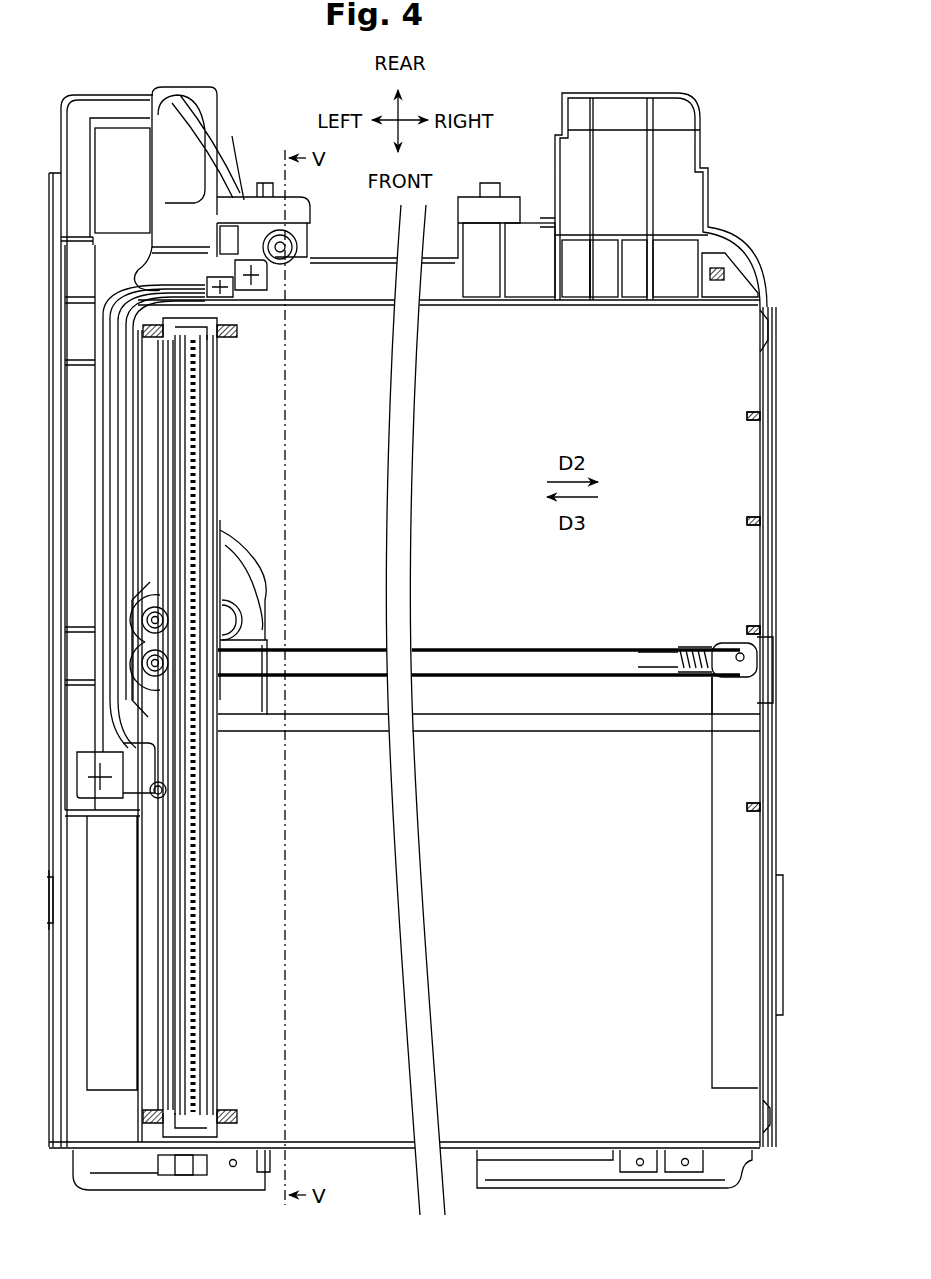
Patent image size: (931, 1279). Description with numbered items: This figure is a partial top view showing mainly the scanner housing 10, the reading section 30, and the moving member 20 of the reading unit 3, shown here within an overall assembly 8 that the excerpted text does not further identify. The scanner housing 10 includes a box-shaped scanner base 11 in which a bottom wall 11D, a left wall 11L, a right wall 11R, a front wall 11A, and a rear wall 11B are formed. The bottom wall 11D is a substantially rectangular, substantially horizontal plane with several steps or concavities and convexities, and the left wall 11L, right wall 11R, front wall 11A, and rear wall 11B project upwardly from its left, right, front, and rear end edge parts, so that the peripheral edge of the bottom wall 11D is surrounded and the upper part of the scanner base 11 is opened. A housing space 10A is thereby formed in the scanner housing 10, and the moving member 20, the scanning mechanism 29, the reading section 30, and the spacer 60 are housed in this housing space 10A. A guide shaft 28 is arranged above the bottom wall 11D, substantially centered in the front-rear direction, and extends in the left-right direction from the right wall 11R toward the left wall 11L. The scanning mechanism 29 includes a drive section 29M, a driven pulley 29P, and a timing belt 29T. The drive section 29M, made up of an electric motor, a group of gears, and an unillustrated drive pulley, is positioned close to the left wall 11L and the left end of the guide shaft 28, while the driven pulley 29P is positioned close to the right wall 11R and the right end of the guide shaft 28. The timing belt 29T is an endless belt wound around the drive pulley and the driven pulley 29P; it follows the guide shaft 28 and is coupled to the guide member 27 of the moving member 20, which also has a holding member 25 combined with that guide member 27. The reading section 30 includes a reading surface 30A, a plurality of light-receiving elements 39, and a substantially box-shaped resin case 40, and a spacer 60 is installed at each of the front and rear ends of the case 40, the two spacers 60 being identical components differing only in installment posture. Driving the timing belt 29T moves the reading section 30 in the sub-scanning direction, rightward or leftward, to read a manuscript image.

The reading unit 3 is at (657, 925).
The recording unit 8 is at (736, 206).
The scanner housing 10 is at (762, 264).
The housing space 10A is at (559, 887).
The scanner base 11 is at (746, 378).
The front wall 11A is at (500, 1145).
The rear wall 11B is at (435, 305).
The bottom wall 11D is at (538, 1006).
The left wall 11L is at (63, 836).
The right wall 11R is at (763, 482).
The moving member 20 is at (347, 782).
The holding member 25 is at (232, 840).
The guide member 27 is at (232, 770).
The guide shaft 28 is at (585, 733).
The scanning mechanism 29 is at (273, 612).
The drive section 29M is at (233, 592).
The driven pulley 29P is at (740, 642).
The timing belt 29T is at (600, 647).
The reading section 30 is at (206, 890).
The reading surface 30A is at (203, 418).
The light-receiving elements 39 is at (208, 453).
The case 40 is at (210, 965).
The spacer 60 is at (246, 328).